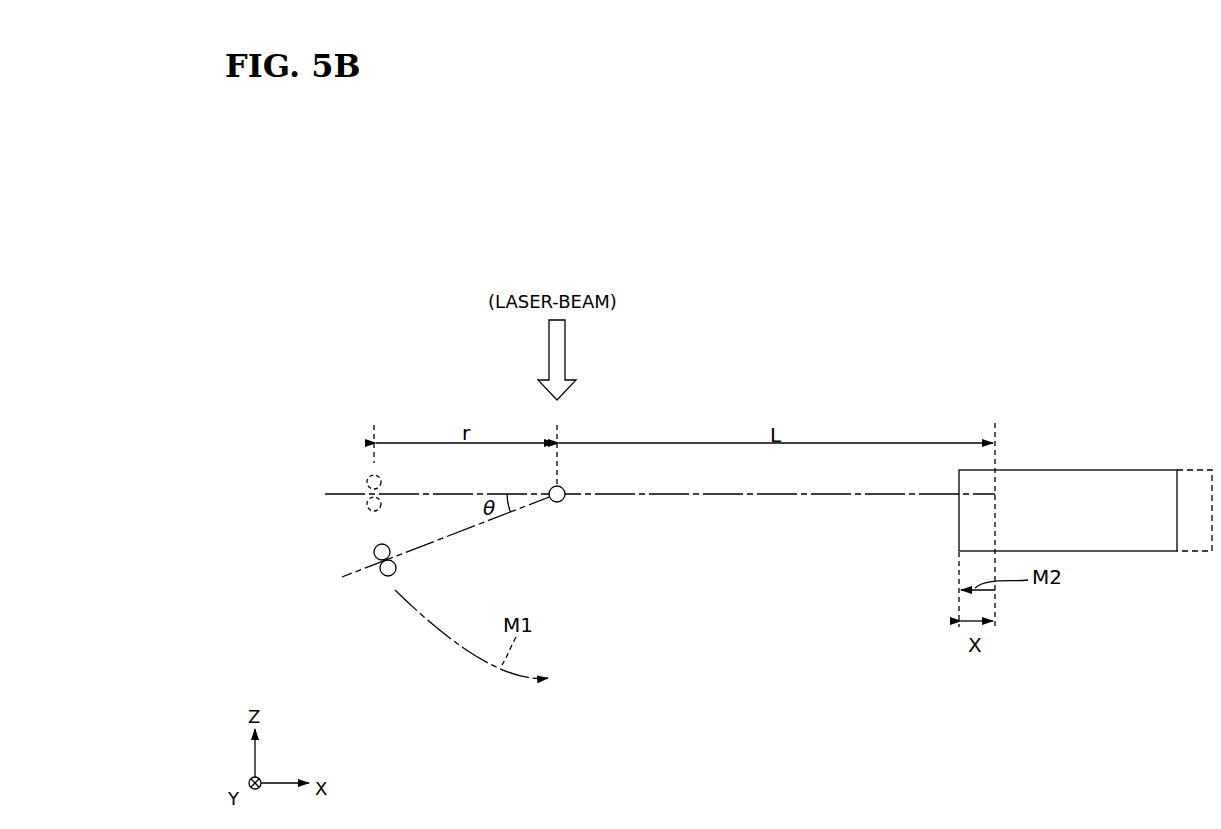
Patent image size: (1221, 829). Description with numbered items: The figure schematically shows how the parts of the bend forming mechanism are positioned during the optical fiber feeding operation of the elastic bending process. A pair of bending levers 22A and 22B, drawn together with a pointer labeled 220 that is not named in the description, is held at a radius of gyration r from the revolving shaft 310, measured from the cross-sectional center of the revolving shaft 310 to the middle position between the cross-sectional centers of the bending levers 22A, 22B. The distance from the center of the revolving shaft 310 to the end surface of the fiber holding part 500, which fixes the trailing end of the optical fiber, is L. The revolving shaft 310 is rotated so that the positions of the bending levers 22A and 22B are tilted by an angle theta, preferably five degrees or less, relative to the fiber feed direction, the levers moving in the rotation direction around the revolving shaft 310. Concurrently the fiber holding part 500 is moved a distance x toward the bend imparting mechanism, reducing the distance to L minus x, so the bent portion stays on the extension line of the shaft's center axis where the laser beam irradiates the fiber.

The bending lever 22A is at (374, 552).
The bending lever 22B is at (385, 576).
The mirror pair / reflecting mirror 220 is at (399, 570).
The revolving shaft 310 is at (558, 502).
The fiber holding part 500 is at (1110, 469).